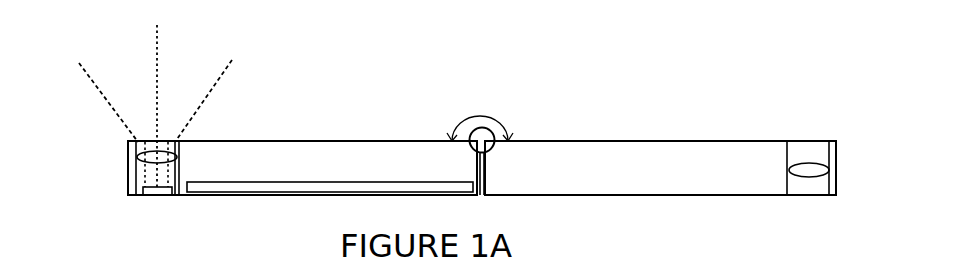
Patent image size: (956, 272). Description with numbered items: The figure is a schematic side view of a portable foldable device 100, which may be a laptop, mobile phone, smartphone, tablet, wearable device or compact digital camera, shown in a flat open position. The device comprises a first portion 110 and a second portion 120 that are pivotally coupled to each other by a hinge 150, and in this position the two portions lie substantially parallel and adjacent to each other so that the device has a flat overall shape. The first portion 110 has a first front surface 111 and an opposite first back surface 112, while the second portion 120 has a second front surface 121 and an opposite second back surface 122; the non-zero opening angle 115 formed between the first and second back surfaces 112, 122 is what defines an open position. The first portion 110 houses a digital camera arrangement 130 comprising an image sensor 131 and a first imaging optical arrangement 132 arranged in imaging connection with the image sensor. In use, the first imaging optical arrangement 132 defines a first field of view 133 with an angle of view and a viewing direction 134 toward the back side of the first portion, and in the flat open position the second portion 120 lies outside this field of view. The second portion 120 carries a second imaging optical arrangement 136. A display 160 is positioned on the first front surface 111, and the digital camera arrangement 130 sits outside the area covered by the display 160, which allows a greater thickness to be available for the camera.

The device 100 is at (743, 97).
The first portion 110 is at (207, 167).
The first front surface 111 is at (183, 197).
The first back surface 112 is at (324, 141).
The opening angle 115 is at (452, 140).
The second portion 120 is at (572, 160).
The second front surface 121 is at (545, 197).
The second back surface 122 is at (527, 140).
The digital camera arrangement 130 is at (137, 178).
The image sensor 131 is at (157, 195).
The first imaging optical arrangement 132 is at (140, 157).
The first field of view 133 is at (200, 103).
The viewing direction 134 is at (157, 57).
The second imaging optical arrangement 136 is at (833, 166).
The hinge 150 is at (460, 129).
The display 160 is at (297, 188).